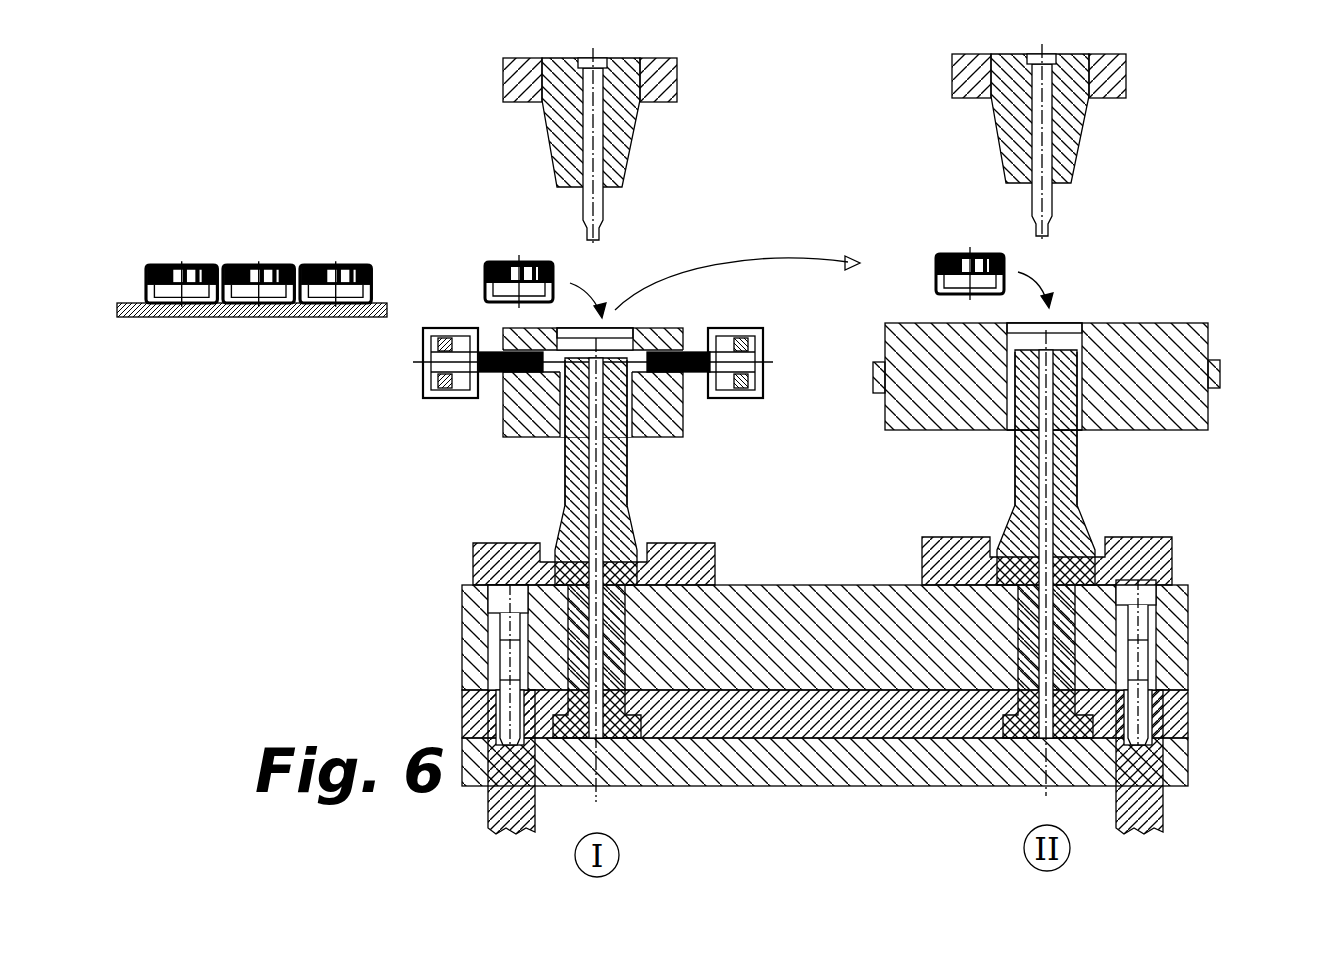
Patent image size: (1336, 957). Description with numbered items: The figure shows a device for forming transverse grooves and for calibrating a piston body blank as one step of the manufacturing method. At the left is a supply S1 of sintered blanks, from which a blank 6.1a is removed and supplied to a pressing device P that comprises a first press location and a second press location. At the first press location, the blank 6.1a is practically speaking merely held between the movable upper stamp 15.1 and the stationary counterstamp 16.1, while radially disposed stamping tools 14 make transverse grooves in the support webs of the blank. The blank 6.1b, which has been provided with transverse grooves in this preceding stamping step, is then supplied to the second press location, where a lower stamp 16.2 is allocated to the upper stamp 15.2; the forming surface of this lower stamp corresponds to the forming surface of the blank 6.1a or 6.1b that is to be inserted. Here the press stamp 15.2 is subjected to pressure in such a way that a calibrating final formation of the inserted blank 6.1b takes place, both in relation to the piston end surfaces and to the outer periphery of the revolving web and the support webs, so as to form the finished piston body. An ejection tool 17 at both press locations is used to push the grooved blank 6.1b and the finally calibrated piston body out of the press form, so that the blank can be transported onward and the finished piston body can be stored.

The upper stamp 15.1 is at (618, 138).
The upper stamp 15.2 is at (1078, 150).
The blank 6.1a is at (495, 263).
The blank 6.1b is at (1006, 268).
The stamping tools 14 is at (490, 378).
The counterstamp 16.1 is at (618, 507).
The lower stamp 16.2 is at (1063, 492).
The ejection tool 17 is at (556, 470).
The supply S1 is at (244, 245).
The pressing device P is at (428, 675).